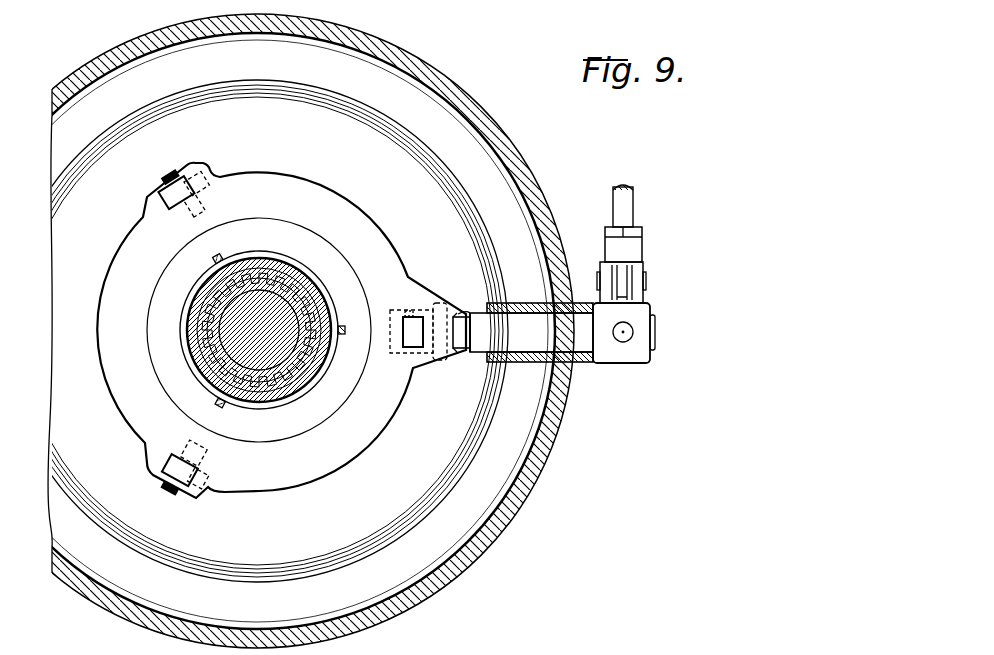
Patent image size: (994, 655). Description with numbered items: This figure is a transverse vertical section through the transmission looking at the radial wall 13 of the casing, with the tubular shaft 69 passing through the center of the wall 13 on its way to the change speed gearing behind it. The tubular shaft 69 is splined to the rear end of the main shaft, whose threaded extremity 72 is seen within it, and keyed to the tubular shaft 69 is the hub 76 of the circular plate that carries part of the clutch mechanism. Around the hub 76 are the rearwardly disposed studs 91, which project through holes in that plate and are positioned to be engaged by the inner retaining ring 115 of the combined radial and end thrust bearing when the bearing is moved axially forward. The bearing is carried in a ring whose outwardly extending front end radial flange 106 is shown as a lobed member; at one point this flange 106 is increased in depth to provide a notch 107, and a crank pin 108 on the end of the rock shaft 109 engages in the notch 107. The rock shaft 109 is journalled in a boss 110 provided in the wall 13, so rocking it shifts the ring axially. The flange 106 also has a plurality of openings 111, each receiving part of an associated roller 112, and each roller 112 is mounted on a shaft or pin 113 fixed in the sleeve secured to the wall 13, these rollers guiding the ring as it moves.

The radial wall 13 is at (266, 610).
The tubular shaft 69 is at (212, 370).
The threaded extremity 72 is at (259, 360).
The hub 76 is at (291, 393).
The studs 91 is at (228, 244).
The front end radial flange 106 is at (382, 424).
The notch 107 is at (452, 310).
The crank pin 108 is at (462, 342).
The rock shaft 109 is at (531, 342).
The boss 110 is at (500, 366).
The openings 111 is at (197, 187).
The roller 112 is at (175, 195).
The shaft or pin 113 is at (177, 177).
The inner retaining ring 115 is at (191, 302).